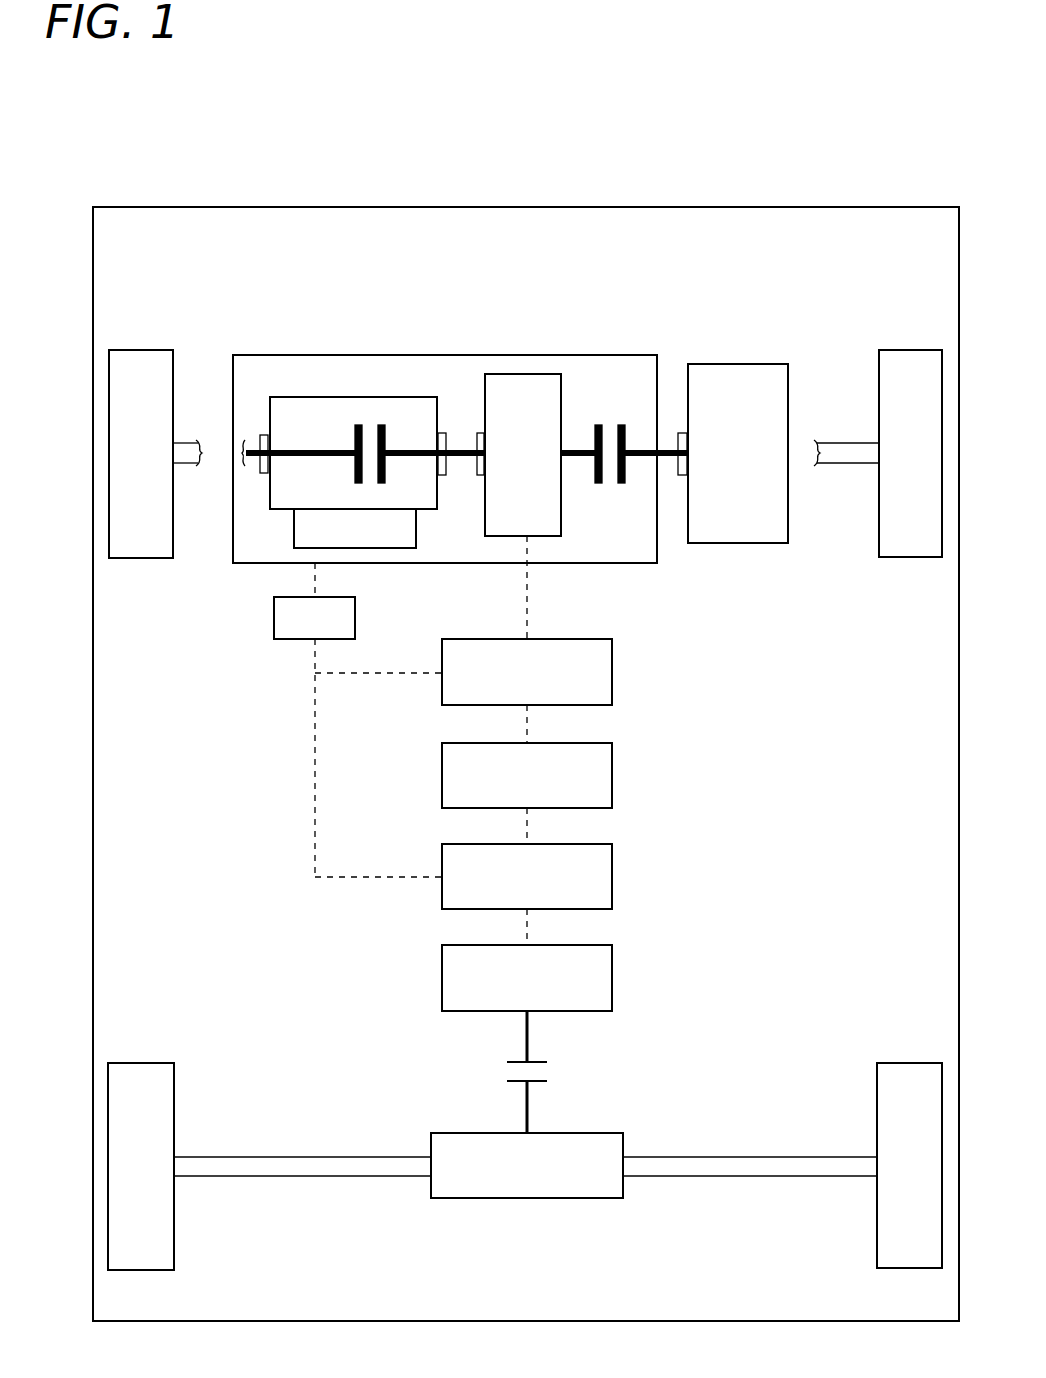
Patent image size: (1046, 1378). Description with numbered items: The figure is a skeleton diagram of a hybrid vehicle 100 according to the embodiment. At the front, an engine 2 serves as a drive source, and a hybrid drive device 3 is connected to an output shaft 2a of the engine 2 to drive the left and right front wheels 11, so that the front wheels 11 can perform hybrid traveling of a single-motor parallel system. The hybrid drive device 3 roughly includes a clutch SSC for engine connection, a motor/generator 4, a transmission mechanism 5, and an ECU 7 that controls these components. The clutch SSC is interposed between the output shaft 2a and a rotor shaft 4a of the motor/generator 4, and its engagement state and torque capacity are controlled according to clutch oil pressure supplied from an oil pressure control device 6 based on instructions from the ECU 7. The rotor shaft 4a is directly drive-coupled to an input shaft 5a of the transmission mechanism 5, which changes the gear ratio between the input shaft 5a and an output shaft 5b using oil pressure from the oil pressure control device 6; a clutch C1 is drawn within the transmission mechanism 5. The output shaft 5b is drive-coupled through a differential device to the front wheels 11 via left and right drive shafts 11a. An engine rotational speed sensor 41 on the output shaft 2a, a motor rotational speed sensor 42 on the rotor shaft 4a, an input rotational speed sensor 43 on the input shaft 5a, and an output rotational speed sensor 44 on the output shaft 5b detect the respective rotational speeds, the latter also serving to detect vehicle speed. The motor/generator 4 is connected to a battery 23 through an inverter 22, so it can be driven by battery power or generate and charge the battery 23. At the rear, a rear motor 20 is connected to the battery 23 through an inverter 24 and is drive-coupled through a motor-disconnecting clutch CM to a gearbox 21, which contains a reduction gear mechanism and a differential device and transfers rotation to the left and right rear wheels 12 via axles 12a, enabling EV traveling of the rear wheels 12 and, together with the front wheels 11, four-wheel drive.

The hybrid vehicle 100 is at (556, 178).
The engine 2 is at (738, 375).
The output shaft 2a is at (667, 462).
The hybrid drive device 3 is at (610, 565).
The motor/generator 4 is at (530, 380).
The rotor shaft 4a is at (580, 462).
The transmission mechanism 5 is at (290, 396).
The input shaft 5a is at (465, 462).
The output shaft 5b is at (250, 462).
The oil pressure control device 6 is at (405, 549).
The ECU 7 is at (272, 618).
The front wheels 11 is at (140, 358).
The drive shafts 11a is at (190, 462).
The rear wheels 12 is at (140, 1068).
The axles 12a is at (285, 1162).
The rear motor 20 is at (442, 982).
The gearbox 21 is at (453, 1132).
The inverter 22 is at (442, 694).
The battery 23 is at (442, 779).
The inverter 24 is at (442, 890).
The engine rotational speed sensor 41 is at (677, 432).
The motor rotational speed sensor 42 is at (480, 432).
The input rotational speed sensor 43 is at (442, 432).
The output rotational speed sensor 44 is at (259, 434).
The clutch C1 is at (390, 440).
The clutch SSC is at (607, 390).
The motor-disconnecting clutch CM is at (548, 1082).